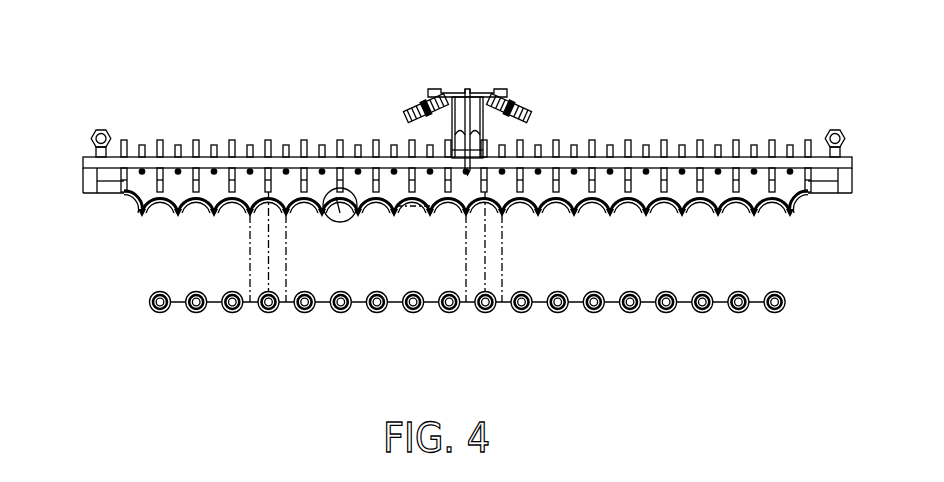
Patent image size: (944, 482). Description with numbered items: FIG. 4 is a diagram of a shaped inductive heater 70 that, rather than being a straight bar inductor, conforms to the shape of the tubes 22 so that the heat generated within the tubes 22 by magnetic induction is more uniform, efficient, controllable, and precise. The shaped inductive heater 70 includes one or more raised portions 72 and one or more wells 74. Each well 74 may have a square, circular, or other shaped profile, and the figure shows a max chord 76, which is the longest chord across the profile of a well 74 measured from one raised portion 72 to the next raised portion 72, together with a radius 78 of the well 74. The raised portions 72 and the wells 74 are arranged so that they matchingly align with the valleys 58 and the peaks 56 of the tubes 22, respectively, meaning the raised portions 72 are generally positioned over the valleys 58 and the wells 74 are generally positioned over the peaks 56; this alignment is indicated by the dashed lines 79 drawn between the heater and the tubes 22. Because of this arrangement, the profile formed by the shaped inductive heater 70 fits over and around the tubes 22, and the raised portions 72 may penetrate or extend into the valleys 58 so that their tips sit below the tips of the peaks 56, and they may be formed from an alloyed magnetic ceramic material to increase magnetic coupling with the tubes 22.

The shaped inductive heater 70 is at (452, 149).
The raised portions 72 is at (140, 214).
The wells 74 is at (162, 196).
The max chord 76 is at (402, 210).
The radius 78 is at (346, 221).
The dashed lines 79 is at (296, 273).
The peaks 56 is at (194, 296).
The valleys 58 is at (185, 313).
The tubes 22 is at (433, 292).